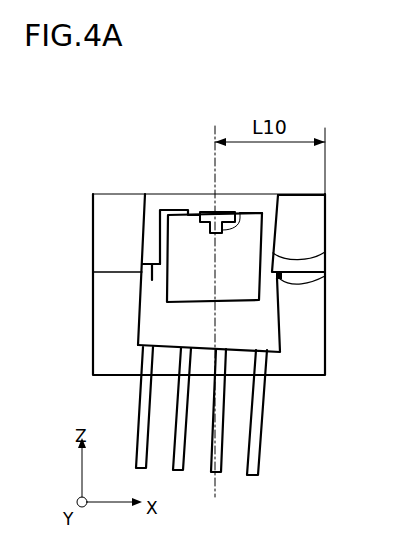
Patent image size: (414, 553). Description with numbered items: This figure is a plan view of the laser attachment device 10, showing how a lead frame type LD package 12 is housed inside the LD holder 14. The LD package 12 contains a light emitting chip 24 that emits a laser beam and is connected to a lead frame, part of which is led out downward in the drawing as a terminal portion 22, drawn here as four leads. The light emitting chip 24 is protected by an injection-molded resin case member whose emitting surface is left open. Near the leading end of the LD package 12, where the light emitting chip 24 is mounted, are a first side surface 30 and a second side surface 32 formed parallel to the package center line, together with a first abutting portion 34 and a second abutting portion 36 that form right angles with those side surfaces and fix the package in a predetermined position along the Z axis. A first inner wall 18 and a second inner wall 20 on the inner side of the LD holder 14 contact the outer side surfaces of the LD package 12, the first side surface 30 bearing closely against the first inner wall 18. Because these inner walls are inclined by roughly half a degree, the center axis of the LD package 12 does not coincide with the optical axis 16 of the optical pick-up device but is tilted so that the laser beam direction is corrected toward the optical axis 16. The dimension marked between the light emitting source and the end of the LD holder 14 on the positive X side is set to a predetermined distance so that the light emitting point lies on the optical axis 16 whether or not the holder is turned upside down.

The laser attachment device 10 is at (209, 228).
The LD package 12 is at (280, 327).
The LD holder 14 is at (325, 210).
The optical axis 16 is at (214, 133).
The first inner wall 18 is at (276, 196).
The second inner wall 20 is at (145, 208).
The terminal portion 22 is at (259, 451).
The light emitting chip 24 is at (239, 215).
The first side surface 30 is at (325, 252).
The second side surface 32 is at (160, 238).
The first abutting portion 34 is at (325, 276).
The second abutting portion 36 is at (154, 268).